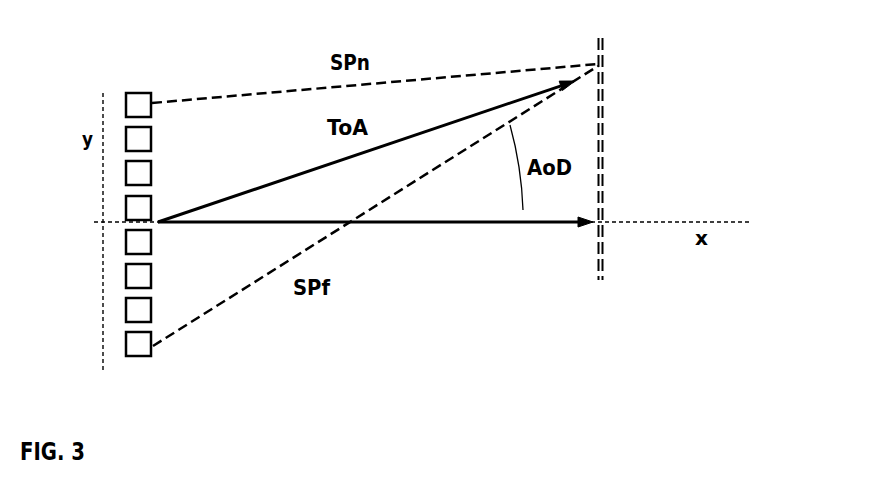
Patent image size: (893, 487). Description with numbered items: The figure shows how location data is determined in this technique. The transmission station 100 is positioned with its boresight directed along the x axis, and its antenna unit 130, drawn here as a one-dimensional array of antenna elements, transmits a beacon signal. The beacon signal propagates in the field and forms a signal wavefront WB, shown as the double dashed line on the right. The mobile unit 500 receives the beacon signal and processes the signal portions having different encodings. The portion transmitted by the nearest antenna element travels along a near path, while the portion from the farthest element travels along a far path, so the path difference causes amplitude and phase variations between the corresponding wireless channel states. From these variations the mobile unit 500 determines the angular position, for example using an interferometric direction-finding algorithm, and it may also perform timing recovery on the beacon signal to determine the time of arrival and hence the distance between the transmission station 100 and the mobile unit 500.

The transmission station 100 is at (136, 255).
The antenna unit 130 is at (155, 201).
The mobile unit 500 is at (647, 146).
The signal wavefront WB is at (605, 90).